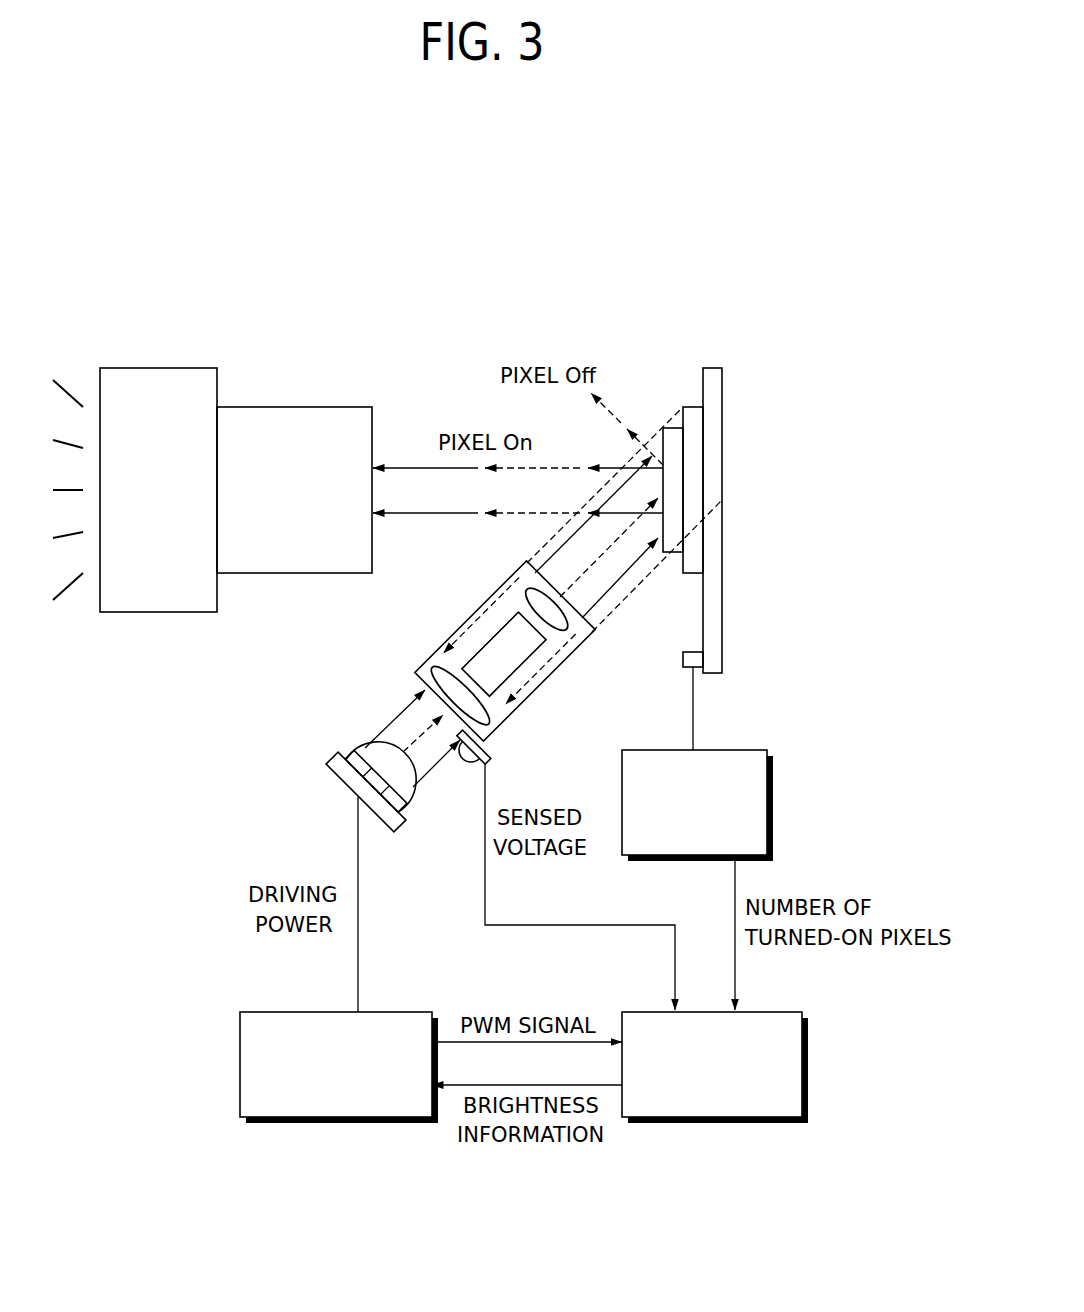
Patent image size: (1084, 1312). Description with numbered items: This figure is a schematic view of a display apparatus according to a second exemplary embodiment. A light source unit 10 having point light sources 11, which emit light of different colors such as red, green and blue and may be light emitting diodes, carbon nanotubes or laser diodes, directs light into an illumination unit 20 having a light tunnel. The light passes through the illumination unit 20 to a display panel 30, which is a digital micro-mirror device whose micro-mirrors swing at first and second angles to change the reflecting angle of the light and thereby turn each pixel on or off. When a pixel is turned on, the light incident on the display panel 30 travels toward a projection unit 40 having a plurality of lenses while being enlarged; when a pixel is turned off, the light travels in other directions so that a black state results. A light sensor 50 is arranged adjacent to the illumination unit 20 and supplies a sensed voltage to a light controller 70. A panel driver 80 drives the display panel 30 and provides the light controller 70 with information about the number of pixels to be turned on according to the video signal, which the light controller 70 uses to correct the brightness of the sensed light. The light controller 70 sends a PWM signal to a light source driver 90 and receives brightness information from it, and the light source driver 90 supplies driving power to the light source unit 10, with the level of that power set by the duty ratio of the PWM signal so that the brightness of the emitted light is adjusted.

The light source unit 10 is at (325, 763).
The point light source 11 is at (355, 748).
The illumination unit 20 is at (436, 652).
The display panel 30 is at (680, 360).
The projection unit 40 is at (175, 368).
The light sensor 50 is at (490, 762).
The light controller 70 is at (712, 1123).
The panel driver 80 is at (772, 800).
The light source driver 90 is at (342, 1123).